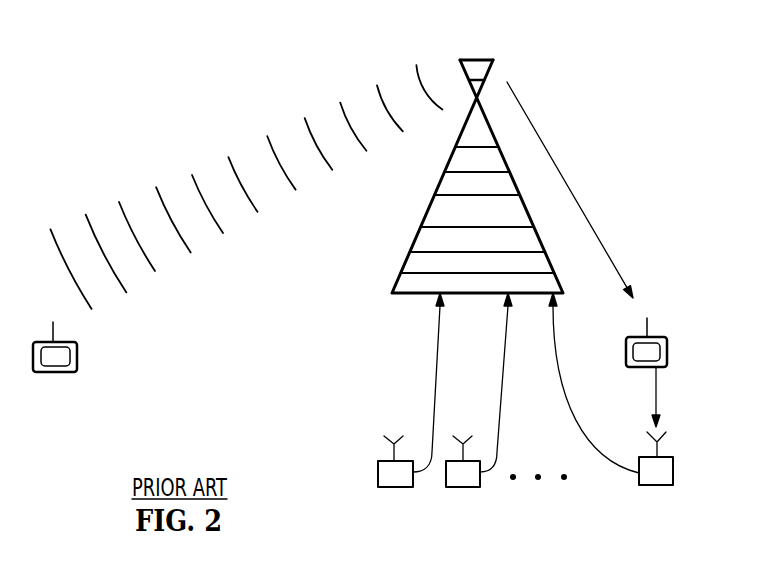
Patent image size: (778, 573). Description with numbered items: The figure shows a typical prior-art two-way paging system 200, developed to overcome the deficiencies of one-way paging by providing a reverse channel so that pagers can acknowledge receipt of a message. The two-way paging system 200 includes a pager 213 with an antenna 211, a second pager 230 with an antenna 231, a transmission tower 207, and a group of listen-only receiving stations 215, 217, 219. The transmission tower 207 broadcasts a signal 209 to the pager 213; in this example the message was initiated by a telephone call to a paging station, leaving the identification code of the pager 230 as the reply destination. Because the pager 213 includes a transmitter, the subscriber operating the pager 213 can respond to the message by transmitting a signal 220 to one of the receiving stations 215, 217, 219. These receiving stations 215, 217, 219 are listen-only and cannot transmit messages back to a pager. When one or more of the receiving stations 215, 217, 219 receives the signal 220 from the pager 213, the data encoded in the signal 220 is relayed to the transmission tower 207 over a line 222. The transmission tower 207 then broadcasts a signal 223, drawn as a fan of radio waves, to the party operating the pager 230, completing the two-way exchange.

The two-way paging system 200 is at (461, 159).
The transmission tower 207 is at (490, 70).
The signal 209 is at (558, 160).
The signal 223 is at (249, 135).
The pager 230 is at (59, 373).
The antenna 231 is at (57, 333).
The antenna 211 is at (650, 323).
The pager 213 is at (672, 353).
The signal 220 is at (657, 393).
The receiving station 215 is at (675, 467).
The line 222 is at (554, 333).
The receiving station 219 is at (400, 488).
The receiving station 217 is at (465, 488).